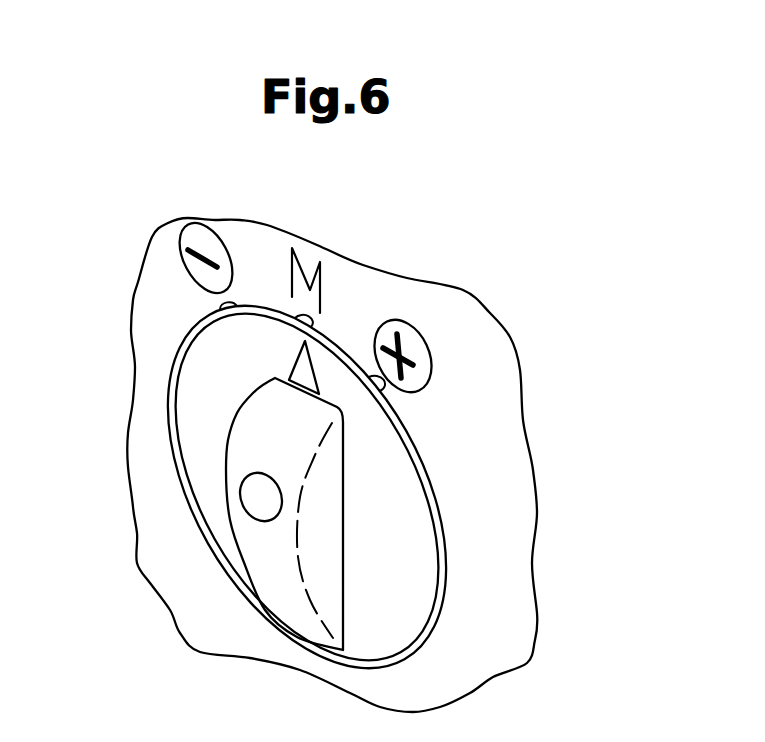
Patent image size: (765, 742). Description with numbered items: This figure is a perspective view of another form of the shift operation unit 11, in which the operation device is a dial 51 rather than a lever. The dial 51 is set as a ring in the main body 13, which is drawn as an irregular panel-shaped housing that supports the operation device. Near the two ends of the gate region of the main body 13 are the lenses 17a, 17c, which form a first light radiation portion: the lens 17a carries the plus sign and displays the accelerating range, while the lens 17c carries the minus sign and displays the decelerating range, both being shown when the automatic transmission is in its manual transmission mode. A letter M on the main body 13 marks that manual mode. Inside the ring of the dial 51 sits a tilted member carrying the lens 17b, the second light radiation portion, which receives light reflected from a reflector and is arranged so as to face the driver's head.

The shift operation unit 11 is at (132, 256).
The main body 13 is at (522, 427).
The lens 17a is at (418, 342).
The lens 17b is at (255, 478).
The lens 17c is at (192, 232).
The dial 51 is at (412, 613).